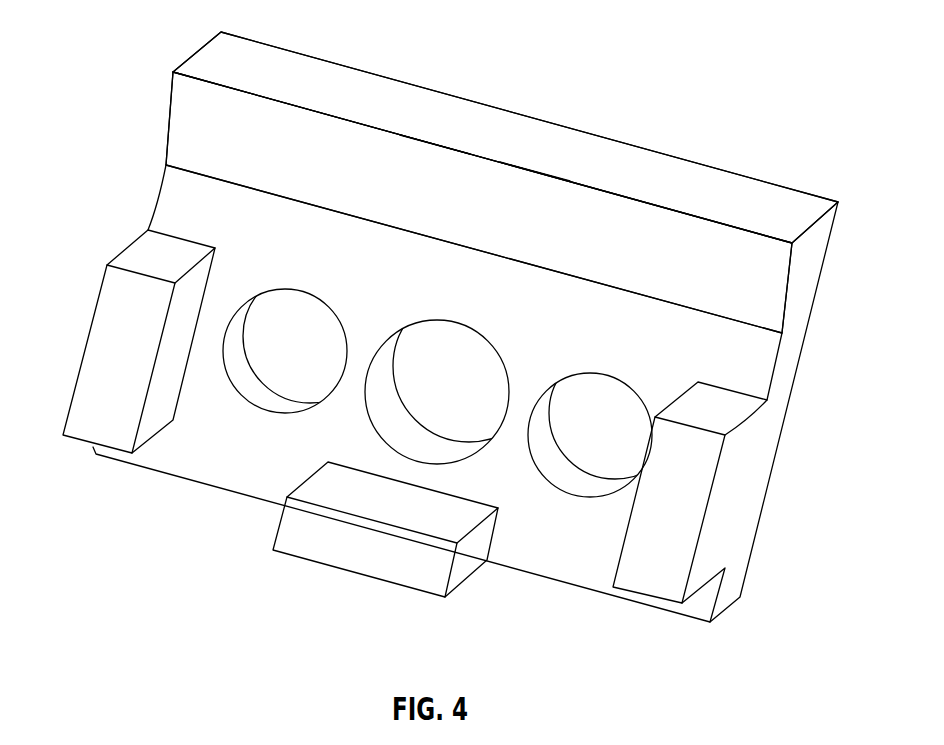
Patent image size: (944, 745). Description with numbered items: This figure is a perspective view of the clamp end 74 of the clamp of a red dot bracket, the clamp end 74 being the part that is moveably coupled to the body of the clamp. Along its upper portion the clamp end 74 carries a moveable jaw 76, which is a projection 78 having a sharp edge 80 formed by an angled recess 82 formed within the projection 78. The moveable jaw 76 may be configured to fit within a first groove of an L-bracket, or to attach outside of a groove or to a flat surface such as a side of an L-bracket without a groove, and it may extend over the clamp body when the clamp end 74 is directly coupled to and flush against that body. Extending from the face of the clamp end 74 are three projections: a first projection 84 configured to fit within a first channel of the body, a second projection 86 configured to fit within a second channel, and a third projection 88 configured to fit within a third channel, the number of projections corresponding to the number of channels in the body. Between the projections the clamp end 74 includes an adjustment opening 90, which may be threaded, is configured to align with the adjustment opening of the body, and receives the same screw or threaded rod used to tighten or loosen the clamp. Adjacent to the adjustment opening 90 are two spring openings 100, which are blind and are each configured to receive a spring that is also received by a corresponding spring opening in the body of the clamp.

The clamp end 74 is at (785, 373).
The moveable jaw 76 is at (672, 165).
The projection 78 is at (532, 172).
The sharp edge 80 is at (437, 145).
The angled recess 82 is at (758, 275).
The first projection 84 is at (360, 555).
The second projection 86 is at (658, 518).
The third projection 88 is at (113, 300).
The adjustment opening 90 is at (452, 368).
The spring openings 100 is at (268, 353).